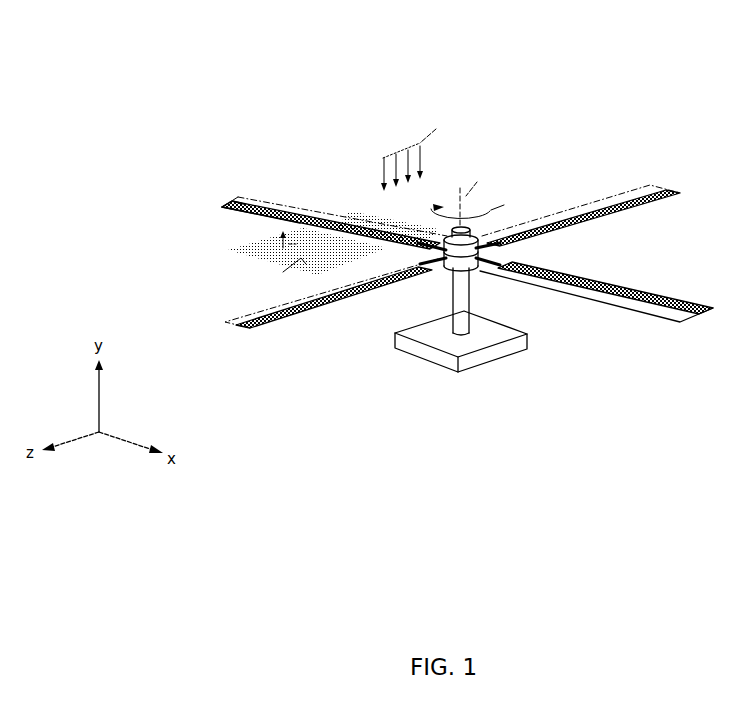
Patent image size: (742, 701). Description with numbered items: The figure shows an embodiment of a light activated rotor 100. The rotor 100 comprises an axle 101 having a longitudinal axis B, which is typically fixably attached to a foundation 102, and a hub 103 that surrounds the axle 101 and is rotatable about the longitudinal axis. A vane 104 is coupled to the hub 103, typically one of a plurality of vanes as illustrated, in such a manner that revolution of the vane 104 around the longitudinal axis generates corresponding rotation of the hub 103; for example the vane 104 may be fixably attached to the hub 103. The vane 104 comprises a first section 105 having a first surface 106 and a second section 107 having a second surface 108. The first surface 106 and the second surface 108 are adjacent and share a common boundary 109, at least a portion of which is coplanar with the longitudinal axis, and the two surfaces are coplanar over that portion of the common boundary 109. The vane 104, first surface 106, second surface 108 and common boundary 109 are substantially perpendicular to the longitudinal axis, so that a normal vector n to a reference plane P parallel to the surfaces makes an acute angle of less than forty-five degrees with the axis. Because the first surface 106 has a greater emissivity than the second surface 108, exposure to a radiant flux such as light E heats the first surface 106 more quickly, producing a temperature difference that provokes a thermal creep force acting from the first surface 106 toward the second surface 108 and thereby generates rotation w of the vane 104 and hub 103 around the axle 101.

The light activated rotor 100 is at (278, 81).
The axle 101 is at (456, 294).
The foundation 102 is at (430, 353).
The hub 103 is at (464, 264).
The vane 104 is at (240, 176).
The first section 105 is at (227, 203).
The first surface 106 is at (253, 212).
The second section 107 is at (260, 197).
The second surface 108 is at (277, 205).
The common boundary 109 is at (338, 224).